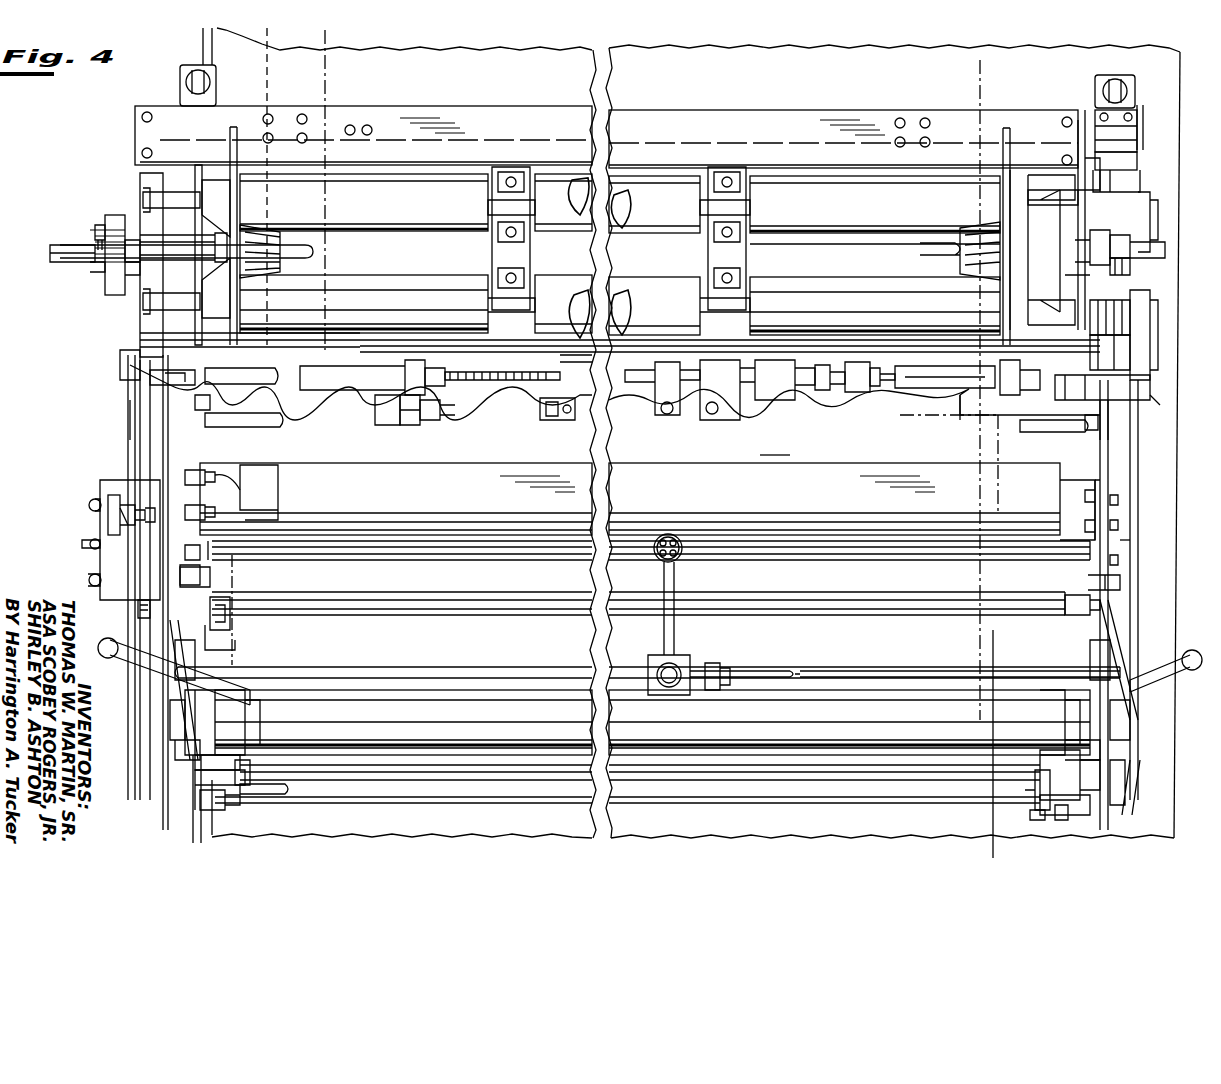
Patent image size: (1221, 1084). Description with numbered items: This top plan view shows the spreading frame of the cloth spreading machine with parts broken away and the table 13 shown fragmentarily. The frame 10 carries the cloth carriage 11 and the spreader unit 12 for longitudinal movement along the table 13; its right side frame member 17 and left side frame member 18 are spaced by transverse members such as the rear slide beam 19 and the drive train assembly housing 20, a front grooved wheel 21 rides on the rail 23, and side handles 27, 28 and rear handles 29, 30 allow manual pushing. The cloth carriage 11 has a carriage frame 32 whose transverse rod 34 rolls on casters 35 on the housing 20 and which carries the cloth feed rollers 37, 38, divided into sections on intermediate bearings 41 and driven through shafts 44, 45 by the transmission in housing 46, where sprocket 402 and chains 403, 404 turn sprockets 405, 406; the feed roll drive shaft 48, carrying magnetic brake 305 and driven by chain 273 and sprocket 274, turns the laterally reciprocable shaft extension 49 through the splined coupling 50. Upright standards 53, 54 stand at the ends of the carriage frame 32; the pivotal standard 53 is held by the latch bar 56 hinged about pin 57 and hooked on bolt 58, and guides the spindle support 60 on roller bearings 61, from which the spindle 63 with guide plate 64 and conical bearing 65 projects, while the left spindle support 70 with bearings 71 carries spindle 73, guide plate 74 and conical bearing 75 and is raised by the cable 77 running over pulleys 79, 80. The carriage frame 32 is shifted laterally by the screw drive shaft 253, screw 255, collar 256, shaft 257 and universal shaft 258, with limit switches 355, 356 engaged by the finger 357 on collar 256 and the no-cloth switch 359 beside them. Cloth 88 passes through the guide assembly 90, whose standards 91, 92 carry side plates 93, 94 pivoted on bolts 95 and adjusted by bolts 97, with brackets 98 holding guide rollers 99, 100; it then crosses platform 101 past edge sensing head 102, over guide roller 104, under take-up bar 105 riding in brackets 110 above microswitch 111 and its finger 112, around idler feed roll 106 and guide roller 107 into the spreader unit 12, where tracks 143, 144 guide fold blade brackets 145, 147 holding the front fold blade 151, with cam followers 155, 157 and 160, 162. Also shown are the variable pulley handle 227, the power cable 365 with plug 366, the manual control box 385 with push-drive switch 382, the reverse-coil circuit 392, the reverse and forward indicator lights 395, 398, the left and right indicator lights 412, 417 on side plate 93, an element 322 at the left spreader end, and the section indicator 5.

The section line 5 is at (356, 40).
The frame 10 is at (127, 425).
The cloth carriage 11 is at (795, 240).
The spreader unit 12 is at (510, 811).
The table 13 is at (892, 448).
The right side frame member 17 is at (165, 440).
The left side frame member 18 is at (1130, 530).
The rear slide beam 19 is at (1085, 115).
The drive train assembly housing 20 is at (777, 446).
The front grooved wheel 21 is at (212, 548).
The track or rail 23 is at (193, 822).
The side handle 27 is at (142, 672).
The side handle 28 is at (1158, 665).
The rear handle 29 is at (186, 92).
The rear handle 30 is at (1125, 98).
The carriage frame 32 is at (505, 129).
The transverse rod 34 is at (125, 361).
The rollers or casters 35 is at (580, 366).
The cloth feed roller 37 is at (446, 301).
The cloth feed roller 38 is at (448, 206).
The intermediate bearings 41 is at (515, 295).
The cloth feed roller shaft 44 is at (1030, 310).
The cloth feed roller shaft 45 is at (1052, 208).
The transmission housing 46 is at (1148, 398).
The cloth feed roll drive shaft 48 is at (808, 395).
The shaft extension 49 is at (1005, 400).
The splined telescoping coupling mechanism 50 is at (908, 392).
The right upright standard 53 is at (112, 215).
The left upright standard 54 is at (1085, 278).
The pivoted latch bar 56 is at (100, 278).
The pin 57 is at (97, 225).
The bolt 58 is at (105, 270).
The spindle support 60 is at (128, 280).
The roller bearings 61 is at (82, 248).
The spindle 63 is at (305, 249).
The cloth roll guide plate 64 is at (230, 142).
The conical cloth roll bearing 65 is at (270, 232).
The left spindle support 70 is at (1130, 270).
The roller bearings 71 is at (1088, 240).
The left spindle 73 is at (922, 252).
The guide plate 74 is at (1010, 160).
The conical bearing 75 is at (968, 270).
The cable 77 is at (1095, 180).
The second pulley 79 is at (1135, 243).
The third pulley 80 is at (1115, 158).
The cloth 88 is at (975, 455).
The intermediate cloth guide assembly 90 is at (1125, 545).
The standard 91 is at (172, 634).
The standard 92 is at (1115, 635).
The side plate 93 is at (200, 445).
The side plate 94 is at (1100, 478).
The bolt 95 is at (165, 700).
The bolt 97 is at (185, 570).
The side brackets 98 is at (196, 408).
The cloth guide roller 99 is at (255, 425).
The cloth guide roller 100 is at (215, 386).
The platform 101 is at (455, 498).
The edge sensing head 102 is at (270, 490).
The guide roller 104 is at (400, 560).
The cloth take-up bar 105 is at (395, 615).
The idler feed roll 106 is at (445, 720).
The guide bar or roller 107 is at (205, 760).
The elongated brackets 110 is at (212, 587).
The microswitch 111 is at (240, 645).
The switch finger 112 is at (232, 622).
The vertical track 143 is at (240, 778).
The vertical track 144 is at (1048, 790).
The fold blade bracket 145 is at (255, 772).
The fold blade bracket 147 is at (1032, 782).
The front fold blade 151 is at (627, 787).
The cam follower 155 is at (255, 796).
The cam follower 157 is at (1050, 820).
The front cam follower 160 is at (222, 810).
The front cam follower 162 is at (1065, 820).
The handle 227 is at (130, 525).
The screw drive shaft 253 is at (645, 385).
The screw 255 is at (520, 382).
The collar 256 is at (450, 386).
The shaft 257 is at (320, 380).
The universal shaft 258 is at (170, 385).
The chain 273 is at (838, 398).
The sprocket 274 is at (865, 400).
The magnetic brake 305 is at (745, 400).
The bracket 322 is at (1118, 790).
The limit switch 355 is at (558, 420).
The limit switch 356 is at (405, 418).
The switch finger 357 is at (440, 420).
The no-cloth limit switch 359 is at (375, 405).
The cable 365 is at (672, 637).
The plug 366 is at (675, 535).
The manual momentary push-drive switch 382 is at (138, 608).
The manual control box 385 is at (130, 540).
The parallel circuit 392 is at (90, 578).
The reverse indicator light 395 is at (90, 502).
The forward indicator light 398 is at (84, 540).
The sprocket 402 is at (1120, 380).
The chain 403 is at (1090, 340).
The chain 404 is at (1150, 346).
The sprocket 405 is at (1090, 325).
The sprocket 406 is at (1140, 205).
The left indicator light 412 is at (185, 478).
The right indicator light 417 is at (185, 512).